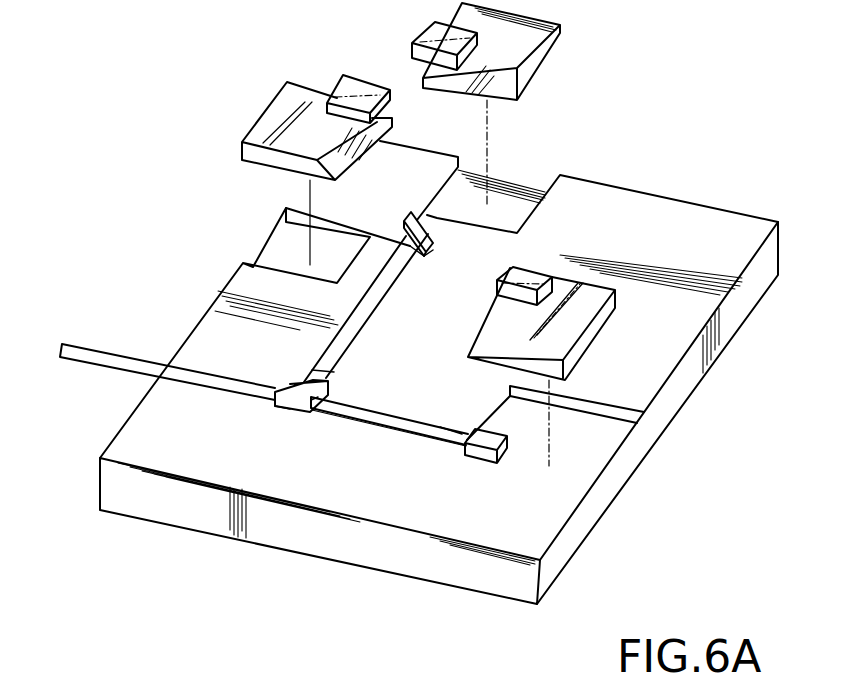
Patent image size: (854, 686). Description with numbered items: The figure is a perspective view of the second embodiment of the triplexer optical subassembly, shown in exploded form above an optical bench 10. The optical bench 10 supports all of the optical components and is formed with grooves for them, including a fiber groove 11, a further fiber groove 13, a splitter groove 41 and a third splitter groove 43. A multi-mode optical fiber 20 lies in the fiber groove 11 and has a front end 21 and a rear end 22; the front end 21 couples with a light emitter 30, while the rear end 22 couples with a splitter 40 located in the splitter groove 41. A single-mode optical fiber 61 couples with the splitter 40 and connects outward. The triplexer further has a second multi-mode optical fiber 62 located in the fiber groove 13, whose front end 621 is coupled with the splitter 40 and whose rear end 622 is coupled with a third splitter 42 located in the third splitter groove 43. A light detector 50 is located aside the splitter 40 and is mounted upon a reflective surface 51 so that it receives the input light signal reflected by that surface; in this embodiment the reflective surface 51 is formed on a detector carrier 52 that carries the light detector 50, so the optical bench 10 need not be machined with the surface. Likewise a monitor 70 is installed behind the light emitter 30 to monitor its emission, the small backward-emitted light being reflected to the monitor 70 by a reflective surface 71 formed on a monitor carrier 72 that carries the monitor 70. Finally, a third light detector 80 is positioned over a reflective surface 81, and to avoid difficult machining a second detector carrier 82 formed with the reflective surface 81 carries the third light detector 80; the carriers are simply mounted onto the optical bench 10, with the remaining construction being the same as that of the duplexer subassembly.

The optical bench 10 is at (632, 446).
The fiber groove 11 is at (390, 427).
The fiber groove 13 is at (383, 300).
The multi-mode optical fiber 20 is at (403, 420).
The front end 21 is at (458, 437).
The rear end 22 is at (312, 410).
The light emitter 30 is at (490, 440).
The splitter 40 is at (303, 383).
The splitter groove 41 is at (273, 410).
The third splitter 42 is at (420, 210).
The third splitter groove 43 is at (433, 250).
The light detector 50 is at (424, 33).
The reflective surface 51 is at (480, 77).
The detector carrier 52 is at (531, 43).
The single-mode optical fiber 61 is at (207, 382).
The second multi-mode optical fiber 62 is at (357, 313).
The front end 621 is at (327, 370).
The rear end 622 is at (416, 252).
The monitor 70 is at (527, 277).
The reflective surface 71 is at (493, 327).
The monitor carrier 72 is at (587, 310).
The third light detector 80 is at (367, 90).
The reflective surface 81 is at (333, 147).
The second detector carrier 82 is at (287, 113).